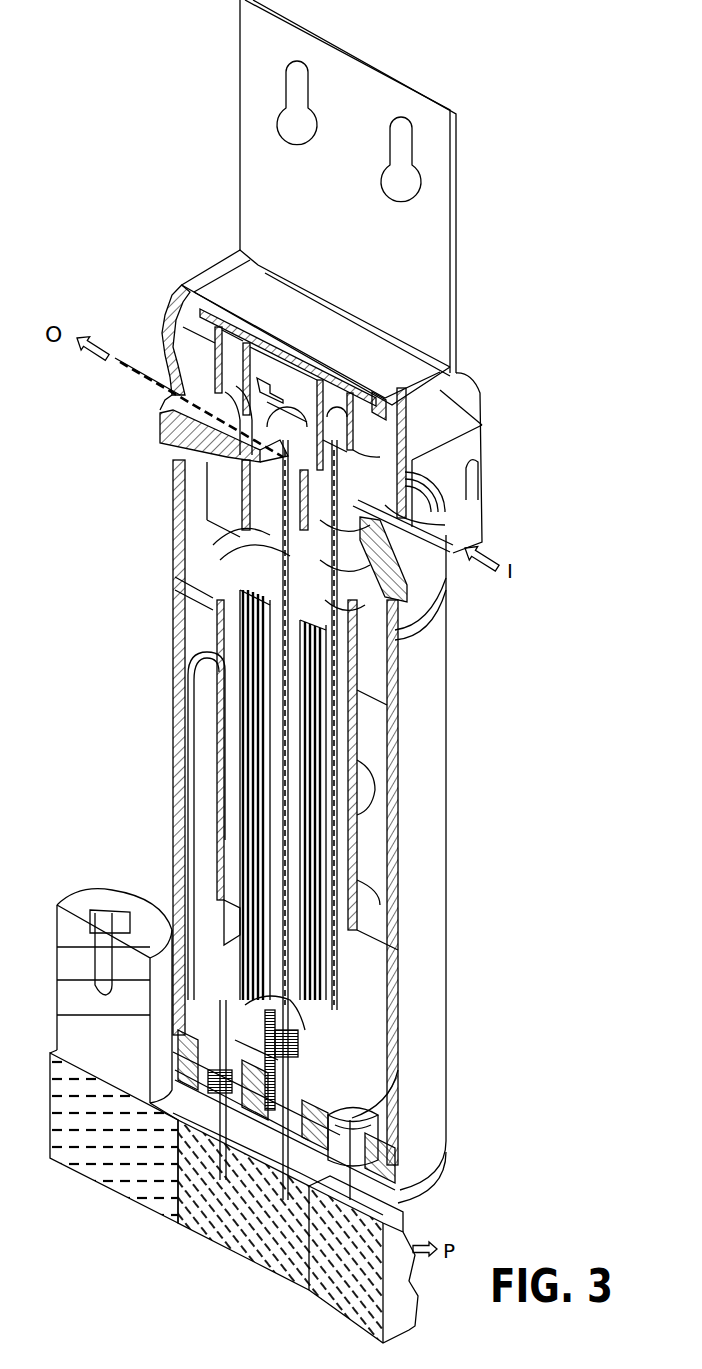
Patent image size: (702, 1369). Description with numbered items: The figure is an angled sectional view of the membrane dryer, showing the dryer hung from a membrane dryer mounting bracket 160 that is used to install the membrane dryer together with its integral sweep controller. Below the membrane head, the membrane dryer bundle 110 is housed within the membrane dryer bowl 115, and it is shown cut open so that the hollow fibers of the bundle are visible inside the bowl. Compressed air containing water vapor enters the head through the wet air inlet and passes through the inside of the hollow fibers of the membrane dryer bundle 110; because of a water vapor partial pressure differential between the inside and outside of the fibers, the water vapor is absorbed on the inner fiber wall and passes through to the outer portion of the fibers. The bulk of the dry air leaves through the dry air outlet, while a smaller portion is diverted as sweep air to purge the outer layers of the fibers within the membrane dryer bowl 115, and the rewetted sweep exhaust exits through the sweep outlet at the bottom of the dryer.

The membrane dryer mounting bracket 160 is at (457, 237).
The membrane dryer bowl 115 is at (423, 763).
The membrane dryer bundle 110 is at (375, 848).